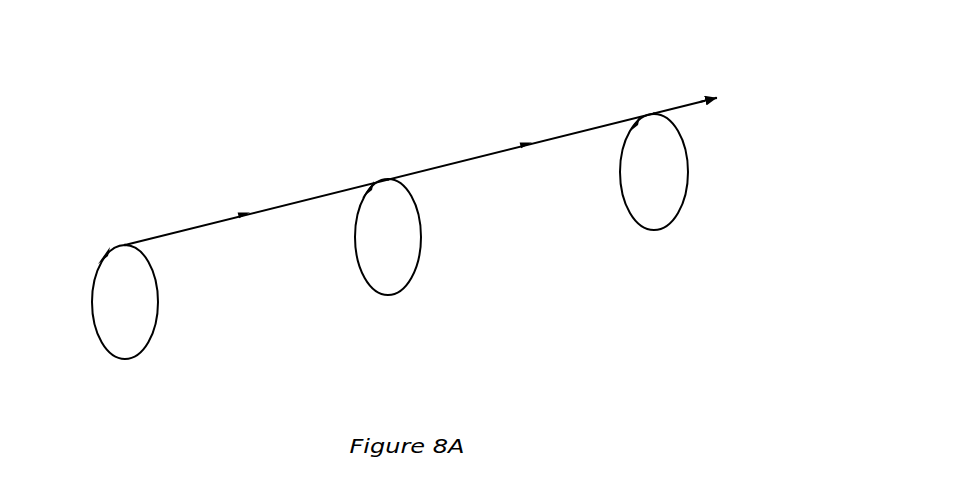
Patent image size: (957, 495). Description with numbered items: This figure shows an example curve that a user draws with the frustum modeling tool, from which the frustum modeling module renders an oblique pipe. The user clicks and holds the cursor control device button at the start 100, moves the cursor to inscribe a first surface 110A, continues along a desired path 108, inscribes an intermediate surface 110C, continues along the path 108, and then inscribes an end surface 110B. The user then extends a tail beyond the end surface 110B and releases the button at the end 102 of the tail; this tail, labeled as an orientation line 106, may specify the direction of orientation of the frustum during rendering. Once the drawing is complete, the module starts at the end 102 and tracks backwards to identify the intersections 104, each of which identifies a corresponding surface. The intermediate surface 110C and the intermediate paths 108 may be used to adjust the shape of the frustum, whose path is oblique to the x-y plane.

The start 100 is at (122, 237).
The end 102 is at (729, 98).
The intersections 104 is at (636, 107).
The orientation line 106 is at (694, 92).
The path 108 is at (195, 240).
The first surface 110A is at (168, 314).
The end surface 110B is at (694, 180).
The intermediate surface 110C is at (433, 252).